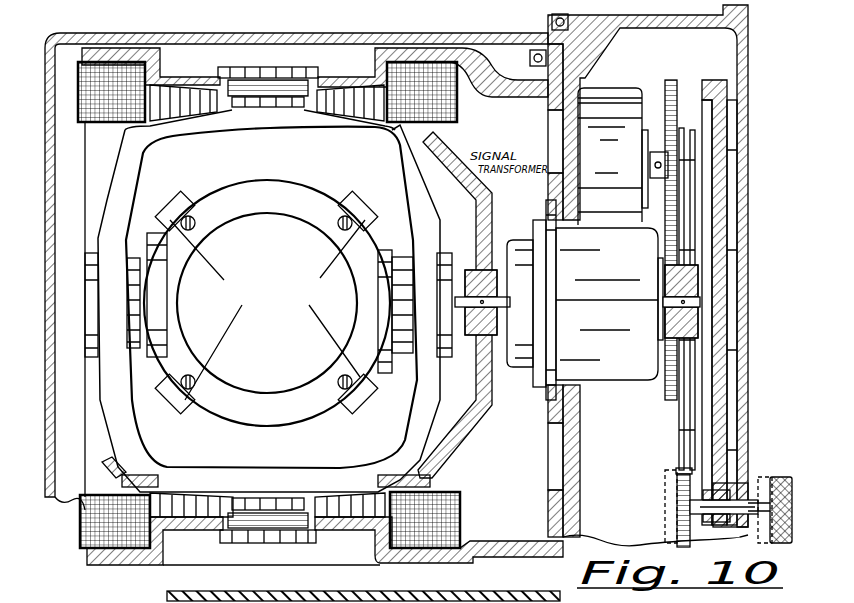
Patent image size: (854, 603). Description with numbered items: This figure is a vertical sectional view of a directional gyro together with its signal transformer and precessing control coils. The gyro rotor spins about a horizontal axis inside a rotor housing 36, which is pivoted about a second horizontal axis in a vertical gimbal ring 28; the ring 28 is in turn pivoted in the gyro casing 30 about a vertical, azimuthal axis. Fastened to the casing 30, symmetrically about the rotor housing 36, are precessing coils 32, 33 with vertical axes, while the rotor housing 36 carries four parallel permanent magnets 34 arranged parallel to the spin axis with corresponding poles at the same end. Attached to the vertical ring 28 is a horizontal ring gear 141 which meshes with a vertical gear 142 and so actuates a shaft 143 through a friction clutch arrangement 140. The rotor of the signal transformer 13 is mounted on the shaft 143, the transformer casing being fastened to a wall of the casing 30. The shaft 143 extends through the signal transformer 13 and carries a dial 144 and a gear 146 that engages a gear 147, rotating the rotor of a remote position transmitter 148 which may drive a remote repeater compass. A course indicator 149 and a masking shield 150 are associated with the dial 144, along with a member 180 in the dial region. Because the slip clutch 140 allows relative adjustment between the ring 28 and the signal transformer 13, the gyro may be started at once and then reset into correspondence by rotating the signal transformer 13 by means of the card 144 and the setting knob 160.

The gyro casing 30 is at (230, 33).
The vertical gimbal ring 28 is at (143, 168).
The permanent magnets 34 is at (192, 208).
The gyro rotor housing 36 is at (292, 185).
The precessing coil 32 is at (460, 115).
The precessing coil 33 is at (458, 520).
The signal transformer 13 is at (525, 240).
The shaft 143 is at (462, 262).
The friction clutch arrangement 140 is at (470, 340).
The vertical gear 142 is at (472, 442).
The horizontal ring gear 141 is at (435, 478).
The remote position transmitter 148 is at (607, 88).
The gear 147 is at (675, 128).
The dial 144 is at (697, 127).
The gear 146 is at (660, 385).
The bracket 180 is at (677, 472).
The course indicator 149 is at (677, 488).
The masking shield 150 is at (672, 507).
The setting knob 160 is at (772, 477).